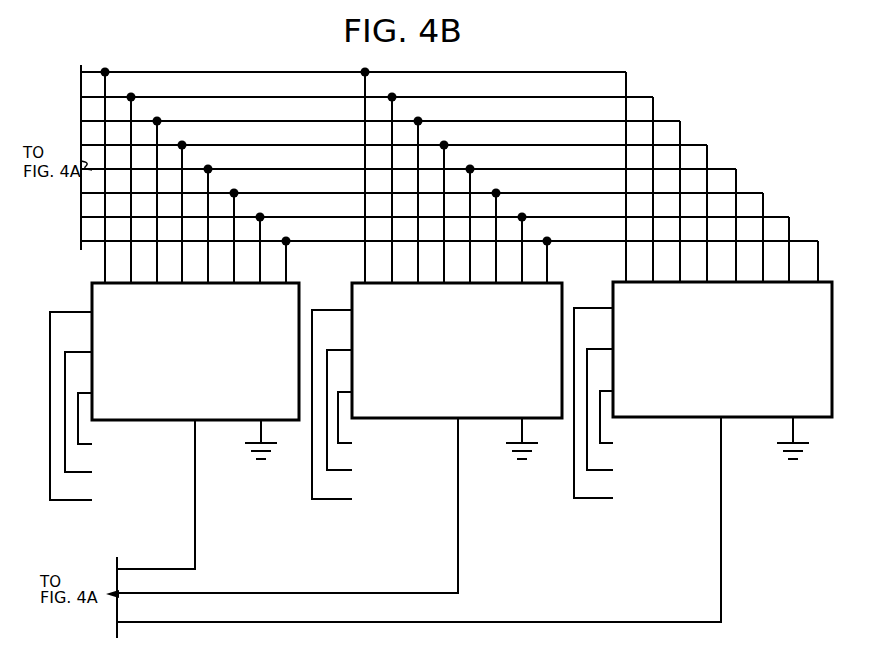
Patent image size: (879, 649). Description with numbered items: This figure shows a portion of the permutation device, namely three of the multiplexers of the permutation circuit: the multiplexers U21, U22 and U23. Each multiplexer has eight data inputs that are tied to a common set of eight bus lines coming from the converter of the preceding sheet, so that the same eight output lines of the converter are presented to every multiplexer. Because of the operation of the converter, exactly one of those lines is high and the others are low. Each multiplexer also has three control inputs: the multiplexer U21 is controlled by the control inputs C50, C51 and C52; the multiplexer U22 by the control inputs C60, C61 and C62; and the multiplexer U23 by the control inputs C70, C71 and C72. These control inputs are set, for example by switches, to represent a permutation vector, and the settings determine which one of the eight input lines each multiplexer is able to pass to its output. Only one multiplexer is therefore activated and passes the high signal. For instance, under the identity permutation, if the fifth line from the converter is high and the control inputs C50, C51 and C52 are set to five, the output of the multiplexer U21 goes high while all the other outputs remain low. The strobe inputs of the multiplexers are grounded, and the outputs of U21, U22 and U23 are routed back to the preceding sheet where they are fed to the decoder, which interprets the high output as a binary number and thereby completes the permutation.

The multiplexer U21 is at (195, 351).
The multiplexer U22 is at (457, 350).
The multiplexer U23 is at (722, 349).
The control input C50 is at (89, 414).
The control input C51 is at (96, 420).
The control input C52 is at (103, 427).
The control input C60 is at (350, 413).
The control input C61 is at (357, 418).
The control input C62 is at (363, 426).
The control input C70 is at (612, 411).
The control input C71 is at (618, 417).
The control input C72 is at (625, 425).